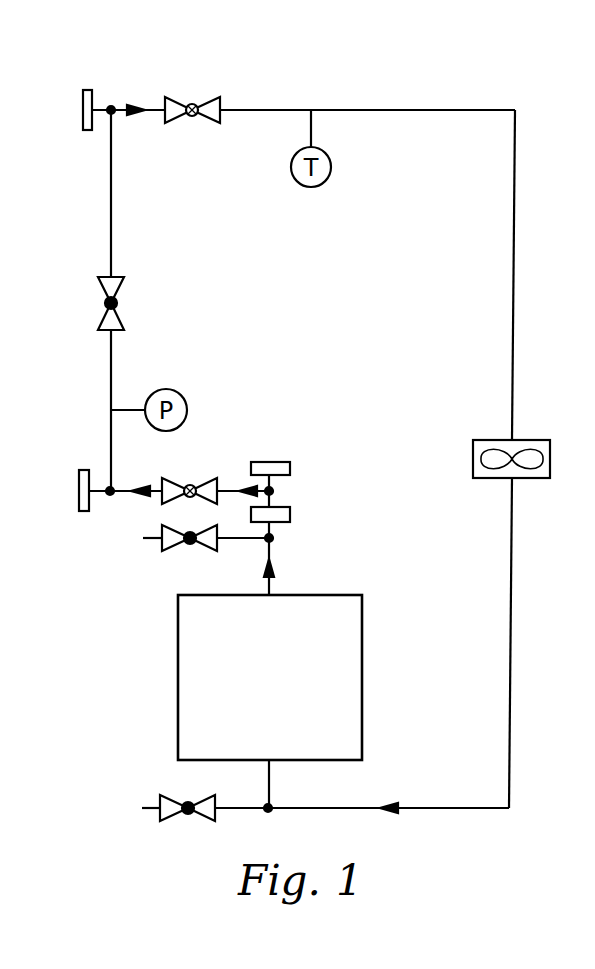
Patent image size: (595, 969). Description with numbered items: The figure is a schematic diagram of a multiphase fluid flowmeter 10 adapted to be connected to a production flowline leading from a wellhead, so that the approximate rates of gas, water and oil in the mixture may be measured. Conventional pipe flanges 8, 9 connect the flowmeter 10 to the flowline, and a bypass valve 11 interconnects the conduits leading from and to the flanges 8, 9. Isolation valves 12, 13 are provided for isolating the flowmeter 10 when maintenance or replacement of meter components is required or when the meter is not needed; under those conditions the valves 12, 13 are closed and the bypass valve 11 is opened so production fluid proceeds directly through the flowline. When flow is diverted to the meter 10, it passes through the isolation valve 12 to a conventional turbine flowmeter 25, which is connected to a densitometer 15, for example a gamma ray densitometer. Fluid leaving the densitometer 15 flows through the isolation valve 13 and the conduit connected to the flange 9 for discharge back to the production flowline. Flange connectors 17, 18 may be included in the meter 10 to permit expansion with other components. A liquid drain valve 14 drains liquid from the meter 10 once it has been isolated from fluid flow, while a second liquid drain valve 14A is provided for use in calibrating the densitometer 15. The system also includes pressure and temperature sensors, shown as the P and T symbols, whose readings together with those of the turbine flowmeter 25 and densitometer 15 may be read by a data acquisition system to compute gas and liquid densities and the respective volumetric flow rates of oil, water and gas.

The pipe flange 8 is at (86, 89).
The pipe flange 9 is at (84, 470).
The multiphase fluid flowmeter 10 is at (542, 90).
The bypass valve 11 is at (106, 278).
The isolation valve 12 is at (204, 119).
The isolation valve 13 is at (175, 484).
The liquid drain valve 14 is at (171, 815).
The second liquid drain valve 14A is at (172, 551).
The densitometer 15 is at (178, 651).
The flange connector 17 is at (291, 466).
The flange connector 18 is at (291, 513).
The turbine flowmeter 25 is at (547, 440).